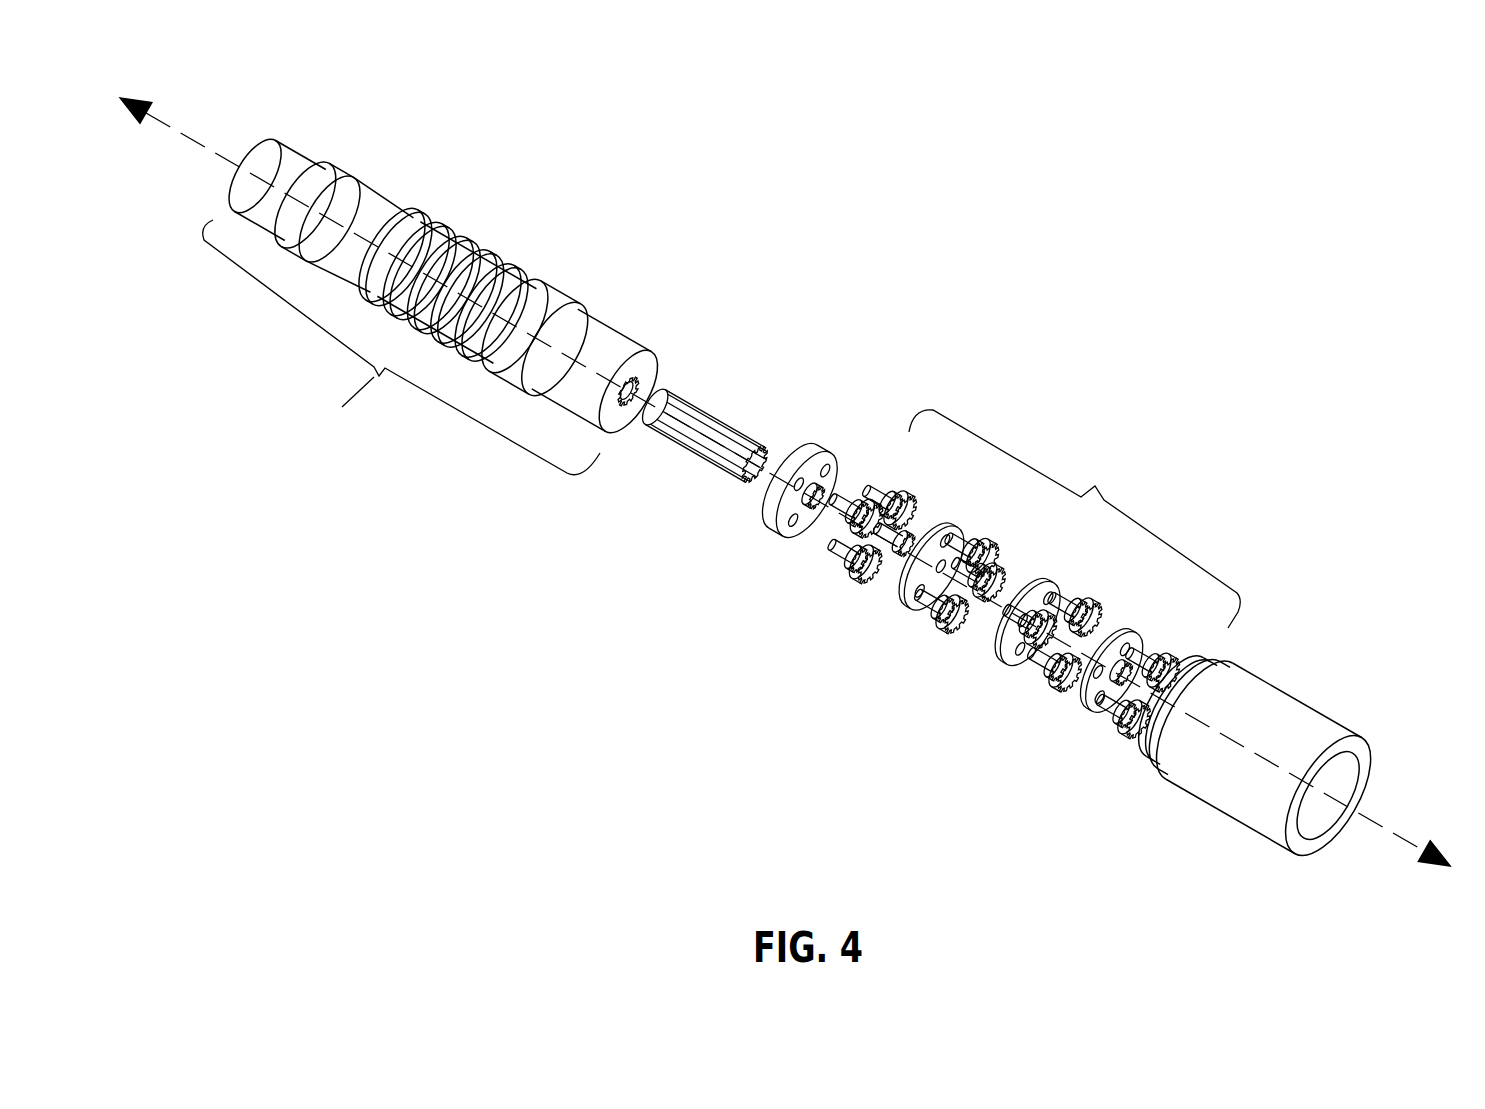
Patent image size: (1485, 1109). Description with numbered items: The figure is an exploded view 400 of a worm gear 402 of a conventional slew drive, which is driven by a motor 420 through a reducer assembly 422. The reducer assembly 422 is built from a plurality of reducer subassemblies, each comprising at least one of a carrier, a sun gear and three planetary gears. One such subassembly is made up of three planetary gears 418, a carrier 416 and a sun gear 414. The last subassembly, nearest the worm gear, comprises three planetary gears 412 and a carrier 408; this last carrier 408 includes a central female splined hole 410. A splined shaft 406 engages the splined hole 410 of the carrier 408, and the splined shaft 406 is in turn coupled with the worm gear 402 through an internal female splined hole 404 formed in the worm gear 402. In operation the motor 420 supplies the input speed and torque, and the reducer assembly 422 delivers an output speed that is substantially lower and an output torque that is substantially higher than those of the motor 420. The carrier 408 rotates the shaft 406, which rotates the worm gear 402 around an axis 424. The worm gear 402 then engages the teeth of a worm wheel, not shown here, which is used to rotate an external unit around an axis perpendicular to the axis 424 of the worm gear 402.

The exploded view 400 is at (1046, 227).
The worm gear 402 is at (433, 317).
The internal female splined hole 404 is at (648, 383).
The splined shaft 406 is at (690, 440).
The carrier 408 is at (780, 519).
The central female splined hole 410 is at (802, 504).
The planetary gears 412 is at (875, 493).
The sun gear 414 is at (897, 572).
The carrier 416 is at (914, 604).
The planetary gears 418 is at (994, 544).
The motor 420 is at (1306, 701).
The reducer assembly 422 is at (992, 526).
The axis 424 is at (196, 145).